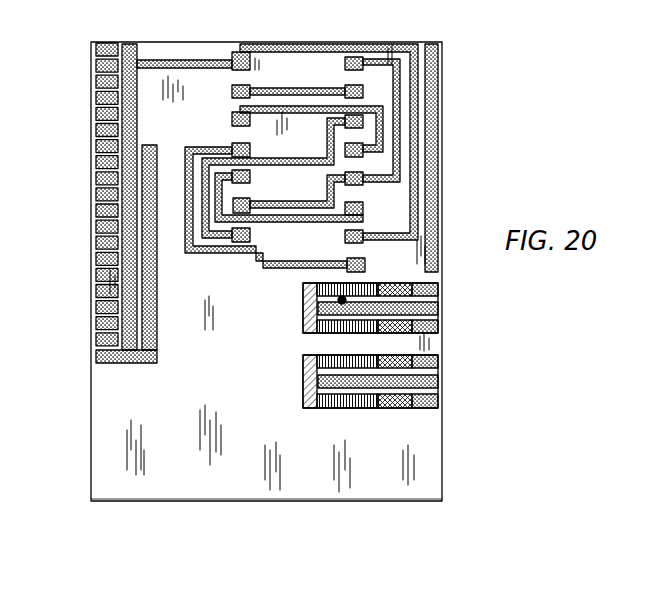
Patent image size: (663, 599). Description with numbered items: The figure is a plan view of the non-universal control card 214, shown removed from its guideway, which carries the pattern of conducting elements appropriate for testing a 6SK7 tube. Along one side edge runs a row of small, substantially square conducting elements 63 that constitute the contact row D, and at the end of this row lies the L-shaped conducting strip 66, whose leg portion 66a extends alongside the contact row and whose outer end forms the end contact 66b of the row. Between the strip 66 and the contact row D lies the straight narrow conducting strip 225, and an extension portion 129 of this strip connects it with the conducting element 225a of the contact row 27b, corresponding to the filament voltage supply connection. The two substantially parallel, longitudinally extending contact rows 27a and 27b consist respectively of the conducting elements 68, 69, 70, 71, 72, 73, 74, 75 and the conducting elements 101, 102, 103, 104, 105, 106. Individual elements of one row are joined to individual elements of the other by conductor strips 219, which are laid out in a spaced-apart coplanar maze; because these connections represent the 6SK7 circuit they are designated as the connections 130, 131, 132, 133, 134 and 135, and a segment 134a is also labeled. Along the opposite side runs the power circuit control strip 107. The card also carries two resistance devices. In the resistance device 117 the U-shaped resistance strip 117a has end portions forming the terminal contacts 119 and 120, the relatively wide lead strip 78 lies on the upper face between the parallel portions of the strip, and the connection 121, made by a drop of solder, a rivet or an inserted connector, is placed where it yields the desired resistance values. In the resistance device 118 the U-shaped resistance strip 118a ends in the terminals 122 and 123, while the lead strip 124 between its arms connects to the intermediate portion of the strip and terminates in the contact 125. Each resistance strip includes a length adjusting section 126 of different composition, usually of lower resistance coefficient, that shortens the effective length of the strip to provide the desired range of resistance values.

The control card 214 is at (150, 505).
The conducting elements 63 is at (97, 227).
The contact row D is at (100, 266).
The L-shaped conducting strip 66 is at (157, 335).
The leg portion 66a is at (151, 298).
The end contact 66b is at (121, 364).
The conducting strip 225 is at (140, 131).
The conducting element 225a is at (232, 69).
The extension portion 129 is at (205, 60).
The contact row 27b is at (240, 54).
The contact row 27a is at (353, 58).
The conductor strips 219 is at (292, 88).
The conductor segment 134a is at (398, 97).
The conducting element 68 is at (345, 64).
The conducting element 69 is at (345, 92).
The conducting element 70 is at (363, 121).
The conducting element 71 is at (357, 144).
The conducting element 72 is at (356, 174).
The conducting element 73 is at (358, 204).
The conducting element 74 is at (357, 233).
The conducting element 75 is at (358, 264).
The conducting element 101 is at (232, 92).
The conducting element 102 is at (232, 120).
The conducting element 103 is at (234, 146).
The conducting element 104 is at (250, 177).
The conducting element 105 is at (250, 203).
The conducting element 106 is at (250, 235).
The connection 130 is at (282, 84).
The connection 131 is at (266, 113).
The connection 132 is at (312, 264).
The connection 133 is at (298, 223).
The connection 134 is at (302, 206).
The connection 135 is at (290, 155).
The power circuit control strip 107 is at (432, 146).
The connection 121 is at (372, 316).
The resistance device 117 is at (303, 300).
The resistance strip 117a is at (303, 326).
The terminal contact 119 is at (440, 287).
The terminal contact 120 is at (440, 327).
The lead strip 78 is at (342, 304).
The resistance device 118 is at (371, 394).
The resistance strip 118a is at (303, 404).
The terminal contact 122 is at (440, 360).
The terminal contact 125 is at (440, 381).
The terminal contact 123 is at (440, 401).
The lead strip 124 is at (337, 409).
The length adjusting section 126 is at (400, 409).